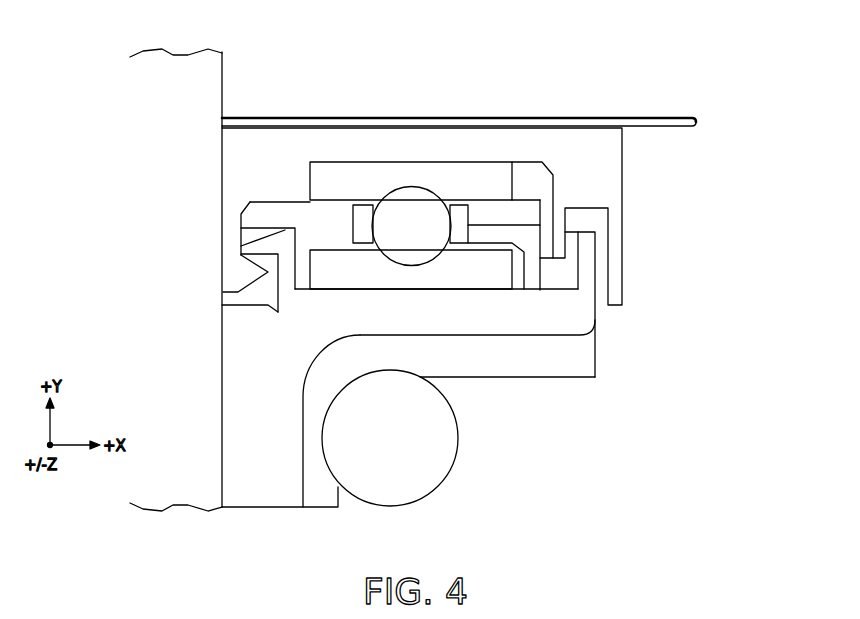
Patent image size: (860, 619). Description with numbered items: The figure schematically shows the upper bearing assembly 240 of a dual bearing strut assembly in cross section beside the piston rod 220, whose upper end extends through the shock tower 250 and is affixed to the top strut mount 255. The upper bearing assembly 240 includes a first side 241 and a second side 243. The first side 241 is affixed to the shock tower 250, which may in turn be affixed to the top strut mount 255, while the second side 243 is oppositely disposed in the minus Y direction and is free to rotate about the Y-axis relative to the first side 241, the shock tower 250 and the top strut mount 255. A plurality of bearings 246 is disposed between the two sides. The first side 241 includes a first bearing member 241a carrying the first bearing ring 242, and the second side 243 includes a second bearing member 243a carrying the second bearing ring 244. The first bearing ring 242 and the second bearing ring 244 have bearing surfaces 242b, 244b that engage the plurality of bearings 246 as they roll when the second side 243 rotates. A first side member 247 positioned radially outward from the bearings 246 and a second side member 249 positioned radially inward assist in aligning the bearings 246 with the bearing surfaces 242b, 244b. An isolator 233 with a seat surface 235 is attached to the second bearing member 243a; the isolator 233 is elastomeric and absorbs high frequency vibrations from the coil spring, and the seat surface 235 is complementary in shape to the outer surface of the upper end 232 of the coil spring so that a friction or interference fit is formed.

The piston rod 220 is at (186, 259).
The upper end of the coil spring 232 is at (458, 439).
The isolator 233 is at (574, 378).
The seat surface 235 is at (349, 381).
The upper bearing assembly 240 is at (642, 89).
The first side 241 is at (626, 212).
The first bearing member 241a is at (231, 172).
The first bearing ring 242 is at (514, 176).
The bearing surface 242b is at (410, 187).
The second side 243 is at (613, 347).
The second bearing member 243a is at (229, 352).
The second bearing ring 244 is at (347, 248).
The bearing surface 244b is at (407, 264).
The plurality of bearings 246 is at (415, 195).
The first side member 247 is at (474, 216).
The second side member 249 is at (352, 218).
The shock tower 250 is at (689, 127).
The top strut mount 255 is at (688, 117).